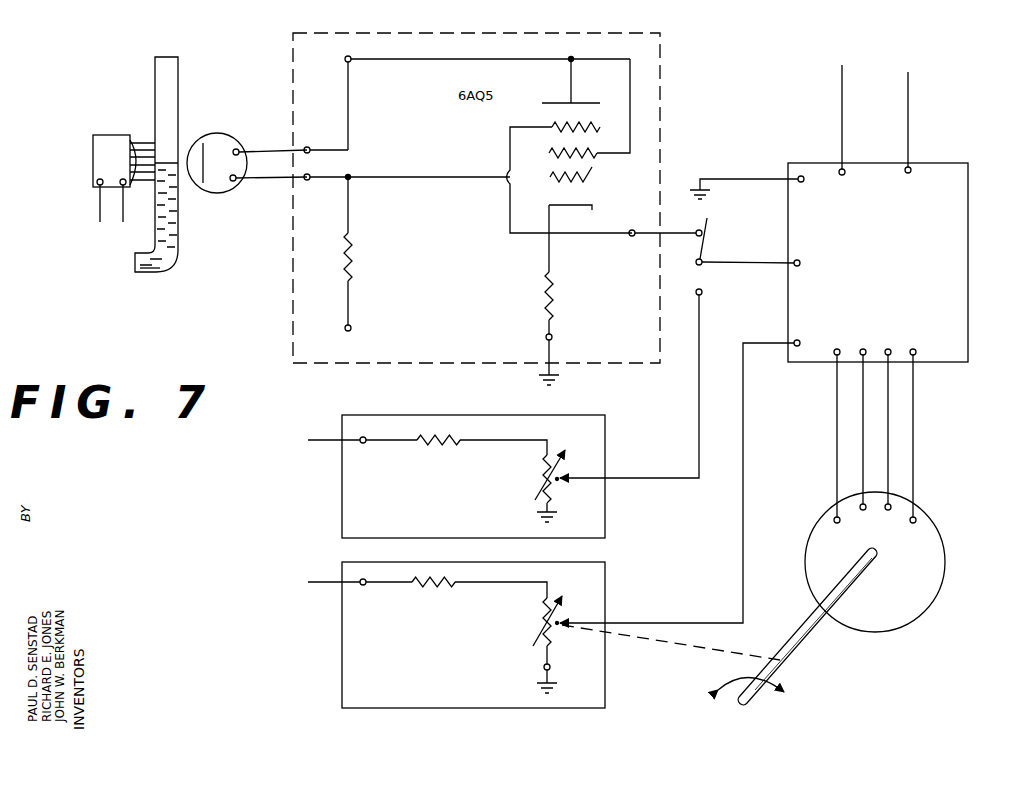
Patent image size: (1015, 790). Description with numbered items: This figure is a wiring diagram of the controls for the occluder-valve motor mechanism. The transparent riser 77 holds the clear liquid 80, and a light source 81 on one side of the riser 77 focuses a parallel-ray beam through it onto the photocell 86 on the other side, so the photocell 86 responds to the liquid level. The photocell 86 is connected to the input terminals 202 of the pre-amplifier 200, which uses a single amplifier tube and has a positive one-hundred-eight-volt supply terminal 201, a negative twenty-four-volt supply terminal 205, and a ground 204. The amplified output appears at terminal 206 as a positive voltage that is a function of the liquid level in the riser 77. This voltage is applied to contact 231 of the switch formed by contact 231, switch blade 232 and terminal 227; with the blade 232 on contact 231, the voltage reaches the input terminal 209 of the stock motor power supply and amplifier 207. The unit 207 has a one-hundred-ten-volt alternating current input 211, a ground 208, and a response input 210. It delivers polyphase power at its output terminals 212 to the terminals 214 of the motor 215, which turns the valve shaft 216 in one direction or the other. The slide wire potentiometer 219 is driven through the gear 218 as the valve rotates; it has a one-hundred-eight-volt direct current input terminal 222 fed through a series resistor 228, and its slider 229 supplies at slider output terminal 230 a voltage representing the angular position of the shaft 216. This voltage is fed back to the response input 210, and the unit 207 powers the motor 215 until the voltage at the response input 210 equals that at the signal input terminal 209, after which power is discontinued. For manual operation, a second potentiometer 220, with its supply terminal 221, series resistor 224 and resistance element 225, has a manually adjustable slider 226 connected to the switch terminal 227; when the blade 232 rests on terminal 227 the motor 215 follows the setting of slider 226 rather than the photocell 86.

The riser 77 is at (160, 58).
The clear liquid 80 is at (160, 268).
The light source 81 is at (98, 158).
The photocell 86 is at (212, 184).
The pre-amplifier 200 is at (638, 52).
The 108 V. positive supply terminal 201 is at (346, 59).
The input terminals 202 is at (312, 175).
The ground 204 is at (551, 340).
The 24 V. negative supply terminal 205 is at (345, 328).
The amplified output terminal 206 is at (630, 236).
The motor power supply and amplifier 207 is at (972, 200).
The ground 208 is at (801, 176).
The input terminal 209 is at (794, 265).
The response input 210 is at (795, 346).
The 110 VAC input 211 is at (906, 170).
The output terminals 212 is at (916, 355).
The motor terminals 214 is at (915, 517).
The motor 215 is at (920, 572).
The motor shaft 216 is at (804, 612).
The gear 218 is at (677, 662).
The slide wire potentiometer 219 is at (366, 645).
The potentiometer 220 is at (366, 496).
The +108V terminal 221 is at (361, 443).
The 108 V. D.C. input terminal 222 is at (361, 585).
The resistor 224 is at (440, 438).
The potentiometer 225 is at (545, 463).
The manually adjustable slider 226 is at (560, 482).
The switch terminal 227 is at (702, 294).
The resistor 228 is at (432, 580).
The slider 229 is at (545, 618).
The slider output terminal 230 is at (560, 622).
The switch contact 231 is at (703, 226).
The switch blade 232 is at (704, 243).